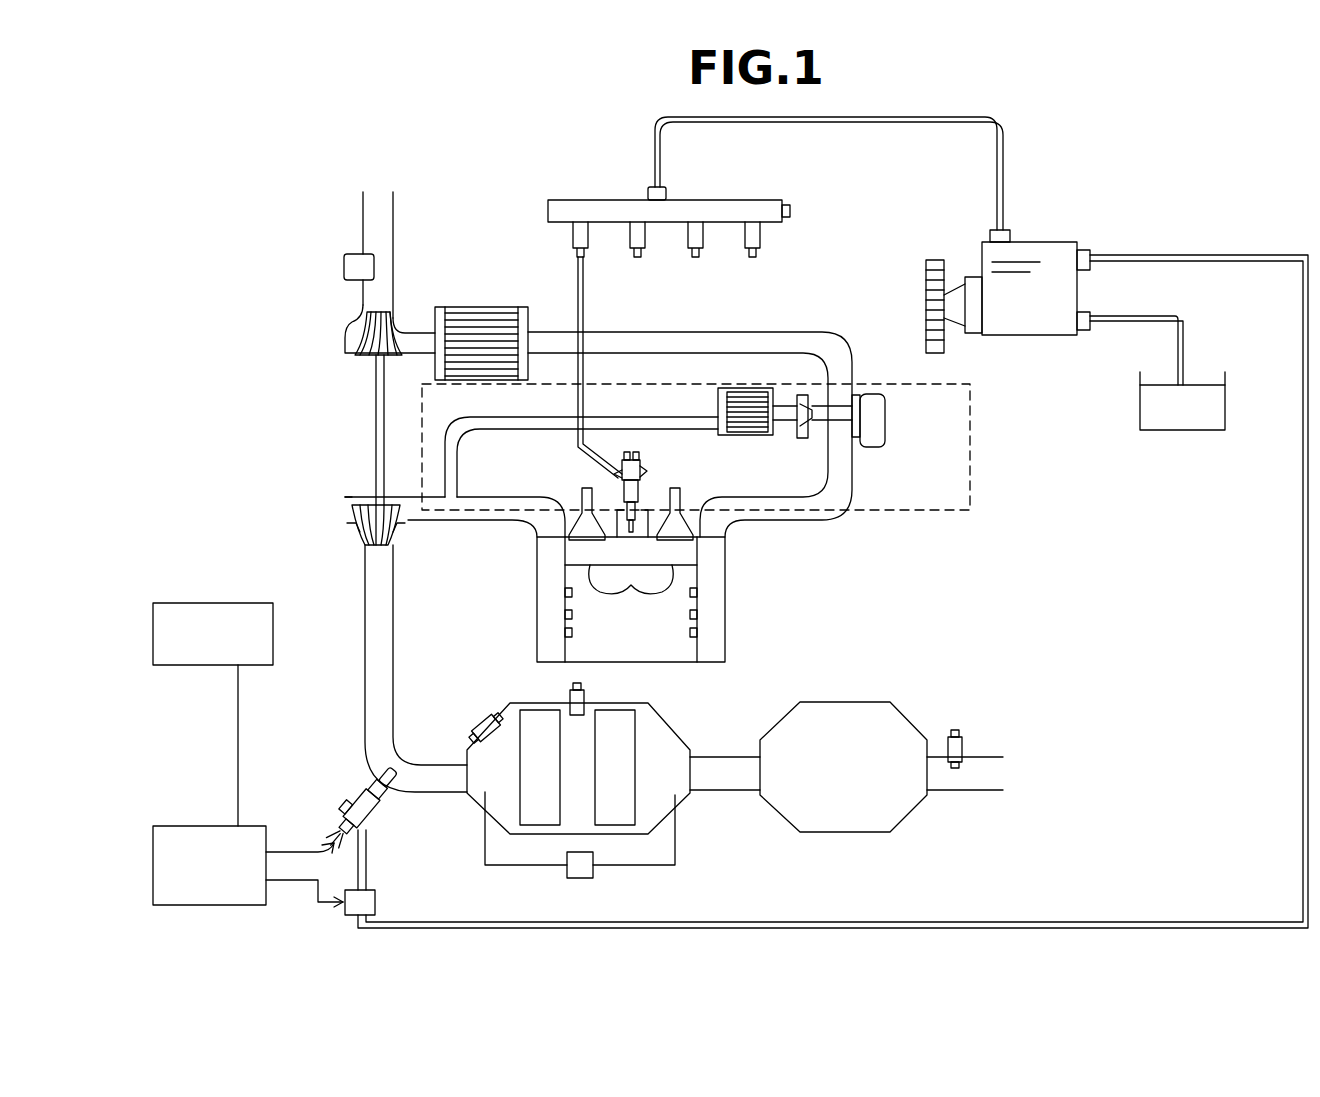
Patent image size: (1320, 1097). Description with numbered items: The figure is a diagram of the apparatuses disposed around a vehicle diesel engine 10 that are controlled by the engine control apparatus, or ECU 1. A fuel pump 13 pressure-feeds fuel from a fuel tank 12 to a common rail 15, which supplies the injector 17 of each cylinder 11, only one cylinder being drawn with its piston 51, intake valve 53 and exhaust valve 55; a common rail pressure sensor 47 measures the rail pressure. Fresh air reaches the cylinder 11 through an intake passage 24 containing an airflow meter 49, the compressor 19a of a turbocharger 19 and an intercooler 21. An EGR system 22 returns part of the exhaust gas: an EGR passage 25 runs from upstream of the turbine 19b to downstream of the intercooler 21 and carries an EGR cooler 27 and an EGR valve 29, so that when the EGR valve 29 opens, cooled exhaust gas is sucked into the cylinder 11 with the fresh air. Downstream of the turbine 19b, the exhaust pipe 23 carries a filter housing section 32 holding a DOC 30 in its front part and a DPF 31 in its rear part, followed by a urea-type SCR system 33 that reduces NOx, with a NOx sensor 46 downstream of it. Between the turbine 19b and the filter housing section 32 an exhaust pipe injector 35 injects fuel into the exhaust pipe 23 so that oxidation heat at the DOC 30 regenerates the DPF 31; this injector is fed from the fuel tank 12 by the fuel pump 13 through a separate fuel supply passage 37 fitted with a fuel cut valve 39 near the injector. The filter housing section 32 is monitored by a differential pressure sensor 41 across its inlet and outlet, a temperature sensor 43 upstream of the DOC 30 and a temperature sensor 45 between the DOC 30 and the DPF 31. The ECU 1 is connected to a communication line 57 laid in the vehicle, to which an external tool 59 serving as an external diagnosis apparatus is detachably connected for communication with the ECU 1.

The engine control apparatus (ECU) 1 is at (205, 826).
The diesel engine 10 is at (734, 549).
The cylinder 11 is at (727, 570).
The fuel tank 12 is at (1178, 432).
The fuel pump 13 is at (1045, 240).
The common rail 15 is at (700, 200).
The injector 17 is at (641, 468).
The turbocharger 19 is at (330, 425).
The compressor 19a is at (344, 345).
The turbine 19b is at (350, 515).
The intercooler 21 is at (493, 307).
The EGR system 22 is at (737, 446).
The exhaust pipe 23 is at (395, 605).
The intake passage 24 is at (395, 225).
The EGR passage 25 is at (503, 430).
The EGR cooler 27 is at (716, 402).
The EGR valve 29 is at (858, 440).
The DOC (Diesel Oxide Catalyst) 30 is at (525, 712).
The DPF (Diesel Particulate Filter) 31 is at (620, 712).
The filter housing section 32 is at (594, 740).
The SCR system 33 is at (898, 700).
The exhaust pipe injector 35 is at (340, 790).
The fuel supply passage 37 is at (737, 920).
The fuel cut valve 39 is at (377, 902).
The differential pressure sensor 41 is at (590, 880).
The temperature sensor 43 is at (470, 730).
The temperature sensor 45 is at (568, 700).
The NOx sensor 46 is at (964, 745).
The common rail pressure sensor 47 is at (792, 211).
The airflow meter 49 is at (342, 266).
The piston 51 is at (670, 650).
The intake valve 53 is at (678, 495).
The exhaust valve 55 is at (585, 492).
The communication line 57 is at (240, 720).
The external tool 59 is at (205, 602).